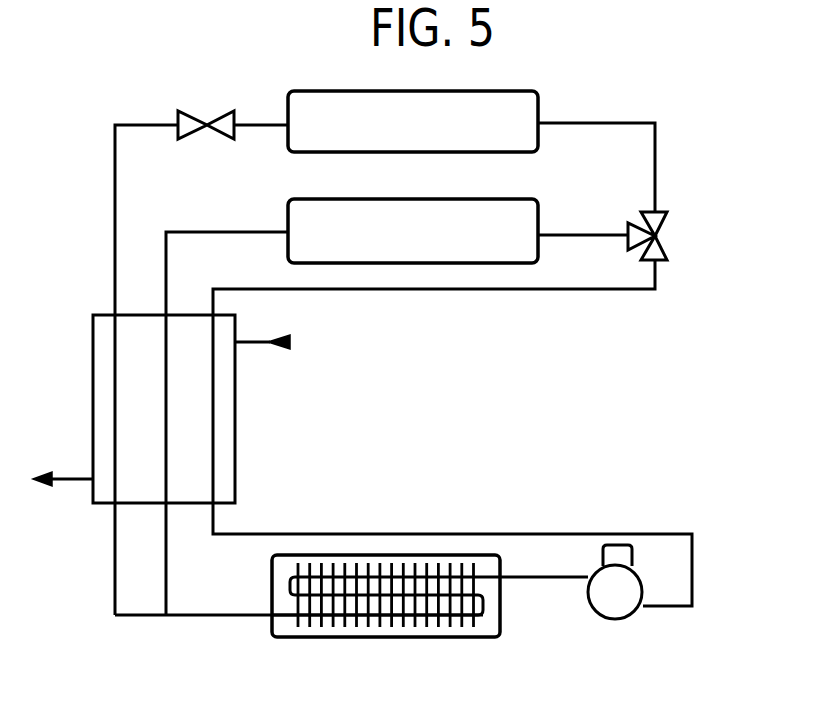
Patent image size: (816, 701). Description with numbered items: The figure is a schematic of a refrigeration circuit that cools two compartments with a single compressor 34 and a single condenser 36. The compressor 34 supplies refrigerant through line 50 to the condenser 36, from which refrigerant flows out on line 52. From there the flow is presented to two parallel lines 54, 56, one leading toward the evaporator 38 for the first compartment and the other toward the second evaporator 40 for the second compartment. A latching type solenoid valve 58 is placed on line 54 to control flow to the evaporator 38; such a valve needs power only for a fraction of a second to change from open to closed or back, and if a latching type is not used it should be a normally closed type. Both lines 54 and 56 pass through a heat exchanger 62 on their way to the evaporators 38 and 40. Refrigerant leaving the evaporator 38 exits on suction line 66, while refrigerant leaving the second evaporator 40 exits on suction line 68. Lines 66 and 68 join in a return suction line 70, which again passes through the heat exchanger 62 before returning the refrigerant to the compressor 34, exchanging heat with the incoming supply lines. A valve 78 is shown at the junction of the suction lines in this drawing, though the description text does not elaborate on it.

The compressor 34 is at (626, 618).
The condenser 36 is at (473, 638).
The evaporator 38 is at (525, 108).
The second evaporator 40 is at (527, 215).
The line 50 is at (533, 550).
The line 52 is at (230, 617).
The parallel line 54 is at (113, 567).
The parallel line 56 is at (165, 586).
The latching type solenoid valve 58 is at (208, 110).
The heat exchanger 62 is at (92, 404).
The suction line 66 is at (577, 122).
The suction line 68 is at (595, 235).
The return suction line 70 is at (627, 292).
The three-way valve 78 is at (660, 247).